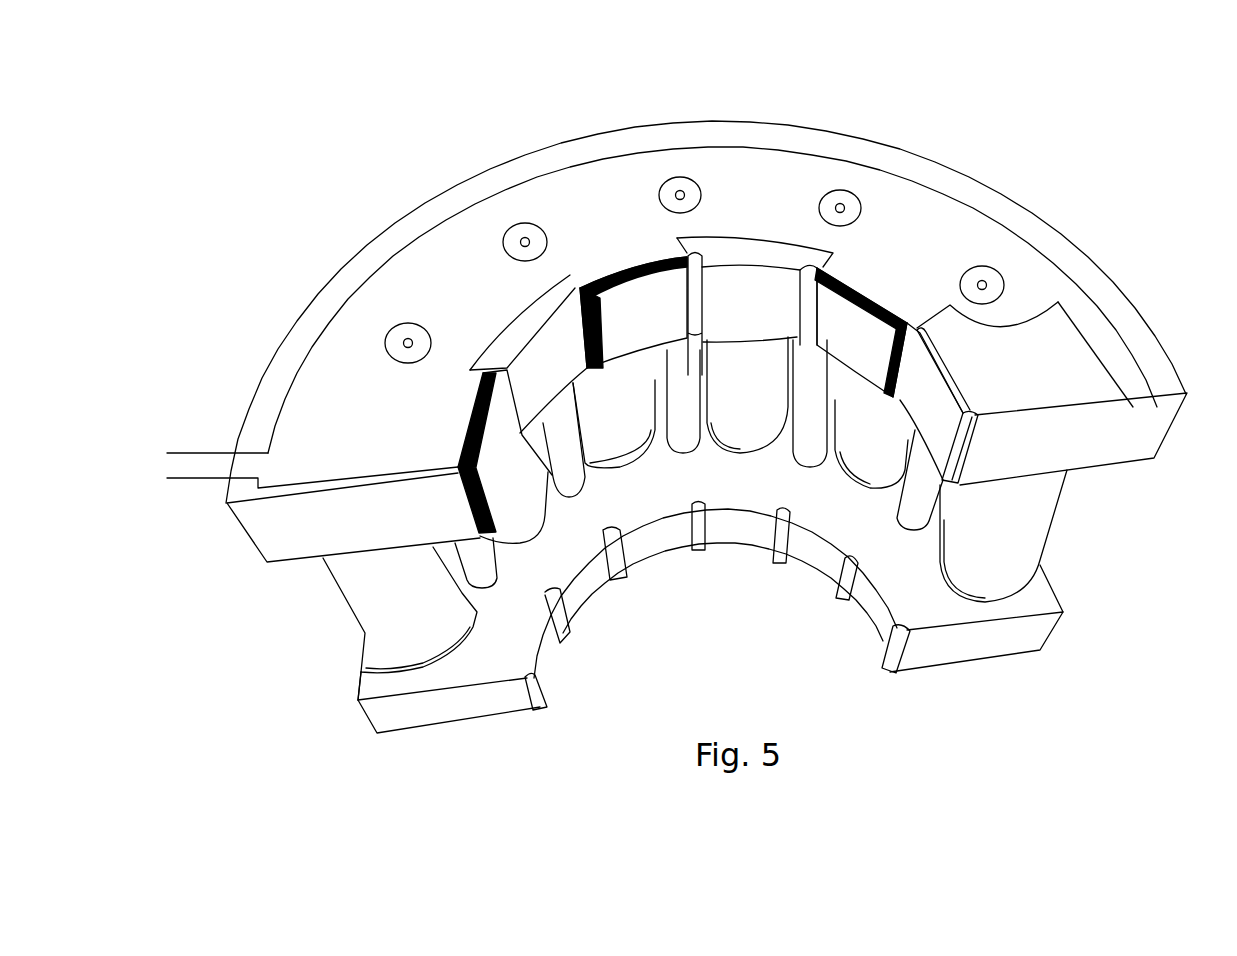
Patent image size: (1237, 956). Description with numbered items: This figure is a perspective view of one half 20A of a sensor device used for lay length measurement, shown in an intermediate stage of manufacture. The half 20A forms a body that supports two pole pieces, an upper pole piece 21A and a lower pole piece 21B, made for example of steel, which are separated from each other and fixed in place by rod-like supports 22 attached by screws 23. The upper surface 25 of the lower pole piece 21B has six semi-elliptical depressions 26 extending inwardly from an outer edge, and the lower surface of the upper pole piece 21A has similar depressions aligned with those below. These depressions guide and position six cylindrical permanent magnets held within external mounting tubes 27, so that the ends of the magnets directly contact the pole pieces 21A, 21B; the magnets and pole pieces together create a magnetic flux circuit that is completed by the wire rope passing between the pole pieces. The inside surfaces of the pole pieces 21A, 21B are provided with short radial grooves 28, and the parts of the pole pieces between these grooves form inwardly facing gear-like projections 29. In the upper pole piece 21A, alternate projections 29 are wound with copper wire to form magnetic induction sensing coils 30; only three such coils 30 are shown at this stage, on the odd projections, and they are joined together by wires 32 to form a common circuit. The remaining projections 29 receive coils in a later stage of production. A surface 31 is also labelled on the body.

The half of the sensor device 20A is at (462, 140).
The upper pole piece 21A is at (1150, 440).
The lower pole piece 21B is at (1040, 632).
The rod-like supports 22 is at (580, 488).
The screws 23 is at (536, 226).
The upper surface 25 is at (507, 653).
The semi-elliptical depressions 26 is at (1040, 575).
The external mounting tubes 27 is at (598, 420).
The radial grooves 28 is at (583, 355).
The gear-like projections 29 is at (629, 335).
The magnetic induction sensing coils 30 is at (612, 272).
The rim 31 is at (1102, 348).
The wires 32 is at (741, 240).